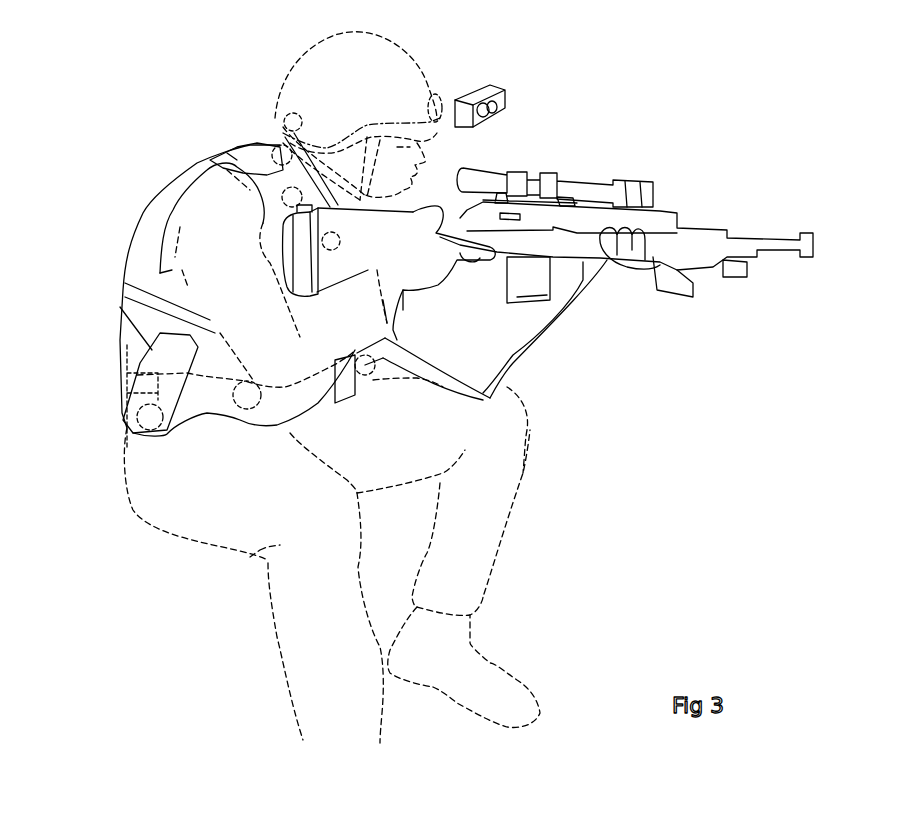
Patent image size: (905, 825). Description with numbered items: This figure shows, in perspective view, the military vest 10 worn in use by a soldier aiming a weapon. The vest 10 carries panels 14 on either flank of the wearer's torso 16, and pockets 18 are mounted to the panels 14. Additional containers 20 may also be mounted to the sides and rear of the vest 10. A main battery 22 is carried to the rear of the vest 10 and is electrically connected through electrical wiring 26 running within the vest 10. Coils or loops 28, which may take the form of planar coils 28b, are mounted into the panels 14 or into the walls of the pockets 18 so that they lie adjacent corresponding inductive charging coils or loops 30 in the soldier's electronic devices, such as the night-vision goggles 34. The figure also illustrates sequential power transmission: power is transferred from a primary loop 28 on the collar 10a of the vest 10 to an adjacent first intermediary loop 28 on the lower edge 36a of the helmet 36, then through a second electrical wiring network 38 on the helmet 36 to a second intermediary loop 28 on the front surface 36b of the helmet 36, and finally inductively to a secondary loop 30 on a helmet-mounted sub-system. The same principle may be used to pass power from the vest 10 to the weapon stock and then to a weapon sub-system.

The military vest 10 is at (113, 190).
The collar 10a is at (227, 143).
The panels 14 is at (205, 385).
The torso 16 is at (195, 185).
The pockets 18 is at (222, 395).
The additional containers 20 is at (145, 393).
The main battery 22 is at (127, 342).
The electrical wiring 26 is at (173, 373).
The coils or loops 28 is at (280, 115).
The planar coils 28b is at (148, 422).
The inductive charging coils or loops 30 is at (480, 93).
The night-vision goggles 34 is at (505, 98).
The helmet 36 is at (405, 78).
The lower edge of helmet 36a is at (268, 110).
The front surface of helmet 36b is at (445, 122).
The second electrical wiring network 38 is at (325, 143).